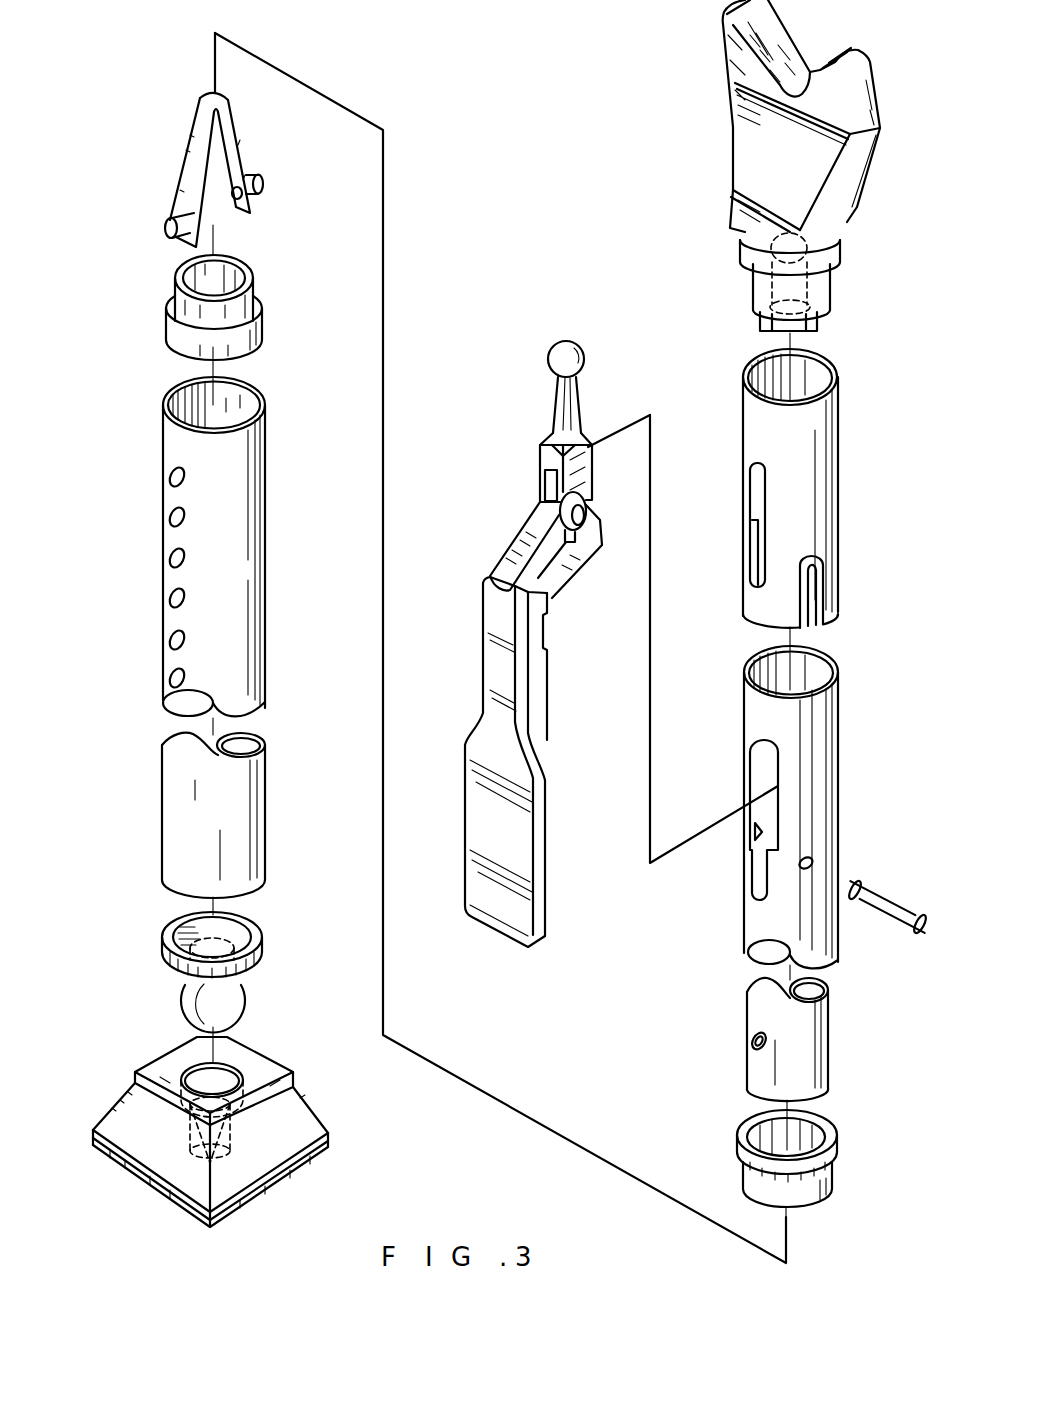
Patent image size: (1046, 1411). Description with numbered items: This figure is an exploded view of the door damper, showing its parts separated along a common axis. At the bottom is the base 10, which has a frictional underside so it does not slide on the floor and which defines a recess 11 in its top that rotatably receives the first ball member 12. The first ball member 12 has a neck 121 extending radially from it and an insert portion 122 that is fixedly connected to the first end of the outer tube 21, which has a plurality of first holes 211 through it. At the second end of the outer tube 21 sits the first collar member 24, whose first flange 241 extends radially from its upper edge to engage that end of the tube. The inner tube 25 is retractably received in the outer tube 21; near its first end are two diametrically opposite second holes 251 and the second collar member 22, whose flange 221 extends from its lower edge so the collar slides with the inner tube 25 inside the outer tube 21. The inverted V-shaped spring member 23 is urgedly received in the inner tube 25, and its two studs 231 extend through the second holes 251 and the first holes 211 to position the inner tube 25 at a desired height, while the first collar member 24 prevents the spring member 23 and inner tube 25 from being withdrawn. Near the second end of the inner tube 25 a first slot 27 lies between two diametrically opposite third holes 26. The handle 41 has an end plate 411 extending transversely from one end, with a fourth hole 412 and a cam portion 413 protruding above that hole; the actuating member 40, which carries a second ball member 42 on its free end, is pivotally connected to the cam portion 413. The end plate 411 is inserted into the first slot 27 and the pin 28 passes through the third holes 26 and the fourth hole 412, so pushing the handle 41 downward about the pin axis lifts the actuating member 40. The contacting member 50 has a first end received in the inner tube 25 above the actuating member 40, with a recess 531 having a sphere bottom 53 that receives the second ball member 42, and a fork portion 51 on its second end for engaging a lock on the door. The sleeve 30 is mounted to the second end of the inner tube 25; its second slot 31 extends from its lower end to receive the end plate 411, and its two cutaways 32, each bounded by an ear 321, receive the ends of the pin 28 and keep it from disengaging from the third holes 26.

The base 10 is at (300, 1112).
The recess 11 is at (232, 1076).
The first ball member 12 is at (238, 996).
The neck 121 is at (258, 923).
The insert portion 122 is at (173, 926).
The outer tube 21 is at (173, 760).
The first holes 211 is at (173, 478).
The second collar member 22 is at (262, 283).
The flange 221 is at (240, 337).
The spring member 23 is at (240, 130).
The studs 231 is at (263, 186).
The first collar member 24 is at (821, 1158).
The first flange 241 is at (834, 1132).
The inner tube 25 is at (757, 998).
The second holes 251 is at (753, 1047).
The third holes 26 is at (813, 862).
The first slot 27 is at (760, 762).
The pin 28 is at (882, 914).
The sleeve 30 is at (818, 458).
The second slot 31 is at (760, 480).
The cutaways 32 is at (803, 588).
The ear 321 is at (813, 608).
The actuating member 40 is at (534, 428).
The handle 41 is at (478, 810).
The end plate 411 is at (565, 567).
The fourth hole 412 is at (576, 544).
The cam portion 413 is at (546, 503).
The second ball member 42 is at (555, 357).
The contacting member 50 is at (816, 201).
The fork portion 51 is at (781, 37).
The sphere bottom 53 is at (838, 262).
The recess 531 is at (818, 313).